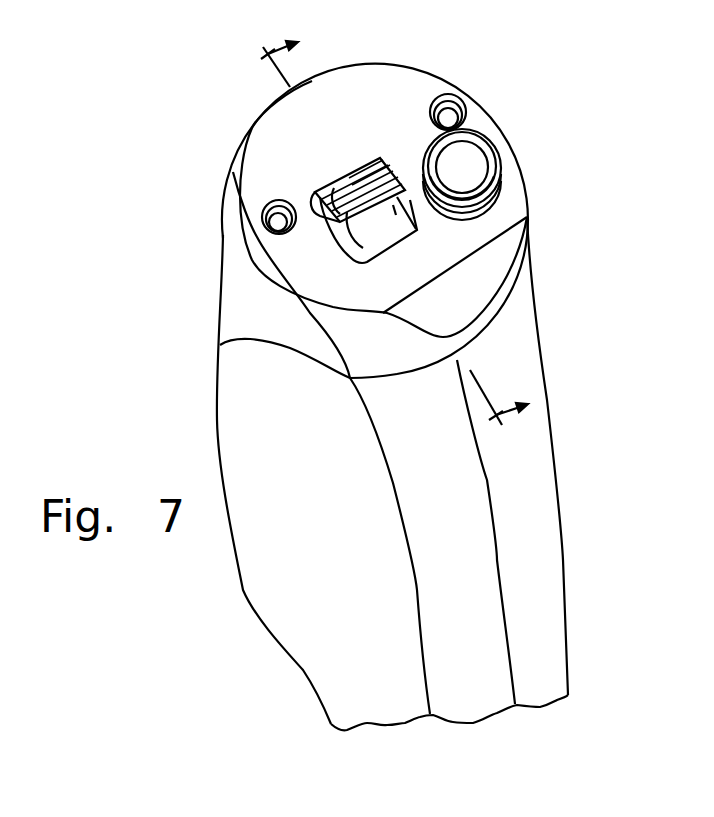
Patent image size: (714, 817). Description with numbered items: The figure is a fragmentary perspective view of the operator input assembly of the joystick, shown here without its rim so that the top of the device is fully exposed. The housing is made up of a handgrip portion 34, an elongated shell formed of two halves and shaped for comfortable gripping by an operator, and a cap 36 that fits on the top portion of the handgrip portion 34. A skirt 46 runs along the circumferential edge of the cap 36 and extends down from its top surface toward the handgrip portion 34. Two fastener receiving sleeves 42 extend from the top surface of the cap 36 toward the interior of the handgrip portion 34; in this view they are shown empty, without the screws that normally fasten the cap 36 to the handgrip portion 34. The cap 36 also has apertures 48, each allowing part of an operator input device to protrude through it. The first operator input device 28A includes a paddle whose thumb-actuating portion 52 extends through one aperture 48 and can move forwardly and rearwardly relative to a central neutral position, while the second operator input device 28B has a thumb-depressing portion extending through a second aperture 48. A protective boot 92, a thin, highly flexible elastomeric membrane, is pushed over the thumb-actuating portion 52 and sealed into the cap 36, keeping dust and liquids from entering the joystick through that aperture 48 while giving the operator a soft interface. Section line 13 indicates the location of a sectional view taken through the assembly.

The section line 13 is at (399, 232).
The operator input device 28A is at (378, 148).
The second operator input device 28B is at (522, 179).
The handgrip portion 34 is at (402, 637).
The cap 36 is at (483, 288).
The fastener receiving sleeve 42 is at (453, 110).
The skirt 46 is at (270, 275).
The aperture 48 is at (317, 188).
The thumb-actuating portion 52 is at (318, 208).
The protective boot 92 is at (320, 292).